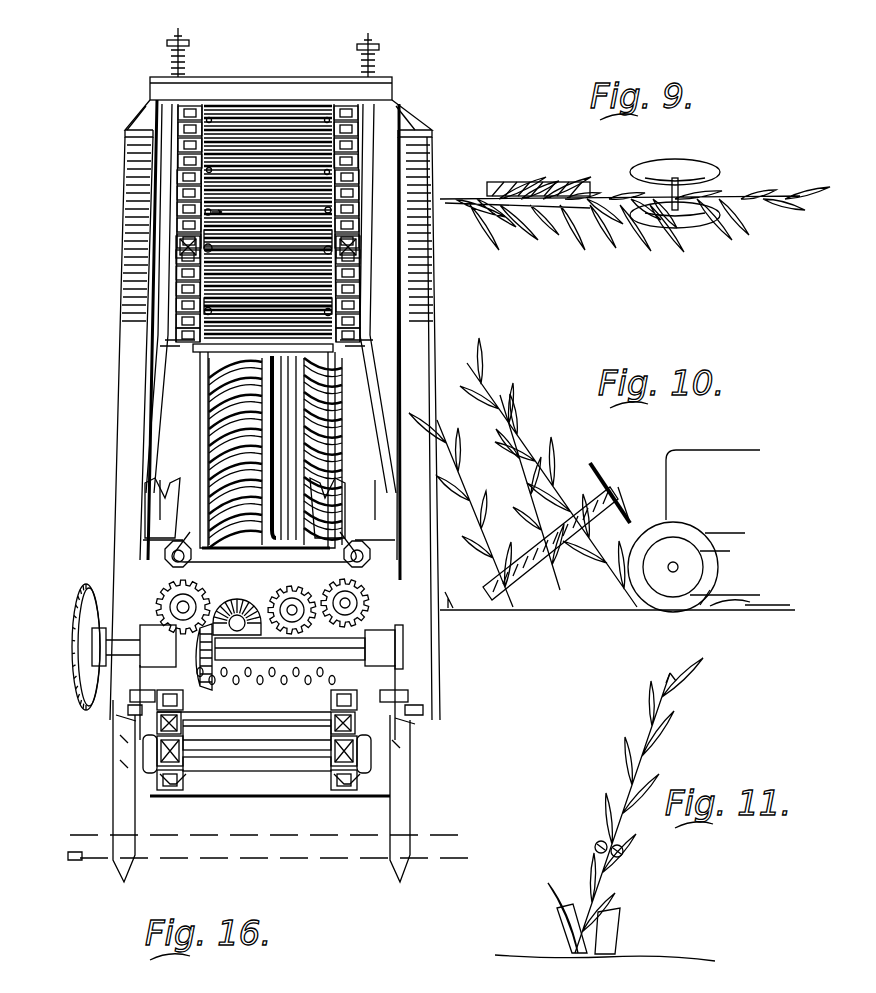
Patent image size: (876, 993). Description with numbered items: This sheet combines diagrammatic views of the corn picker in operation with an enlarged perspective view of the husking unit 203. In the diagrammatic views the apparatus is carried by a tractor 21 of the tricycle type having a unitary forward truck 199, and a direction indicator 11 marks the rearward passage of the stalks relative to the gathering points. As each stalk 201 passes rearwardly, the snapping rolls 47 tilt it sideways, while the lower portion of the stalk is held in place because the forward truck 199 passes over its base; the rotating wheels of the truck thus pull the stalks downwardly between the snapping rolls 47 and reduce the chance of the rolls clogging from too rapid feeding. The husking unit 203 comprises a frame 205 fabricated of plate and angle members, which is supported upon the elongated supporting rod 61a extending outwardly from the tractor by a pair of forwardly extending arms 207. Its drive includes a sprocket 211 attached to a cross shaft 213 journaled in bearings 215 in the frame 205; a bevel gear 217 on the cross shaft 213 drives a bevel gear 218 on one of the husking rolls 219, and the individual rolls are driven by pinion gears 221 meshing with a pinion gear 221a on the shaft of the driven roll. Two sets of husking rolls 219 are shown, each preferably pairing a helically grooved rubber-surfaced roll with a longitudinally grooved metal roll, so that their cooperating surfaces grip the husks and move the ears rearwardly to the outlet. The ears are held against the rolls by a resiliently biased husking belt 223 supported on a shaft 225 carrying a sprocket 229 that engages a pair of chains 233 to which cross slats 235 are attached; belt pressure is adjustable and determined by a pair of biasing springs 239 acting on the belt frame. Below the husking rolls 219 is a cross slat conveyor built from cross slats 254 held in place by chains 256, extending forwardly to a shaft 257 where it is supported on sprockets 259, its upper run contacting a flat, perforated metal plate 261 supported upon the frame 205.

In FIG. 16, the biasing springs 239 is at (355, 64).
In FIG. 16, the chains 233 is at (180, 165).
In FIG. 16, the husking belt 223 is at (205, 212).
In FIG. 16, the shaft 225 is at (174, 257).
In FIG. 16, the cross slats 235 is at (278, 244).
In FIG. 16, the sprocket 229 is at (303, 305).
In FIG. 16, the husking unit 203 is at (107, 338).
In FIG. 16, the frame 205 is at (130, 440).
In FIG. 16, the husking rolls 219 is at (227, 448).
In FIG. 16, the pinion gears 221 is at (178, 585).
In FIG. 16, the pinion gear 221a is at (265, 563).
In FIG. 16, the sprocket 211 is at (80, 622).
In FIG. 16, the bearings 215 is at (138, 644).
In FIG. 16, the cross shaft 213 is at (365, 655).
In FIG. 16, the bevel gear 217 is at (204, 684).
In FIG. 16, the bevel gear 218 is at (268, 679).
In FIG. 16, the chains 256 is at (128, 716).
In FIG. 16, the shaft 257 is at (148, 757).
In FIG. 16, the sprockets 259 is at (157, 789).
In FIG. 16, the forwardly extending arms 207 is at (120, 824).
In FIG. 16, the cross slats 254 is at (224, 747).
In FIG. 16, the perforated metal plate 261 is at (294, 705).
In FIG. 16, the supporting rod 61a is at (66, 860).
In FIG. 9, the snapping rolls 47 is at (550, 182).
In FIG. 10, the snapping rolls 47 is at (570, 550).
In FIG. 11, the snapping rolls 47 is at (603, 860).
In FIG. 9, the forward truck 199 is at (703, 212).
In FIG. 10, the forward truck 199 is at (715, 610).
In FIG. 11, the forward truck 199 is at (597, 923).
In FIG. 9, the stalk 201 is at (542, 252).
In FIG. 10, the stalk 201 is at (560, 474).
In FIG. 11, the stalk 201 is at (628, 778).
In FIG. 10, the direction of travel 11 is at (502, 450).
In FIG. 10, the tractor 21 is at (726, 495).